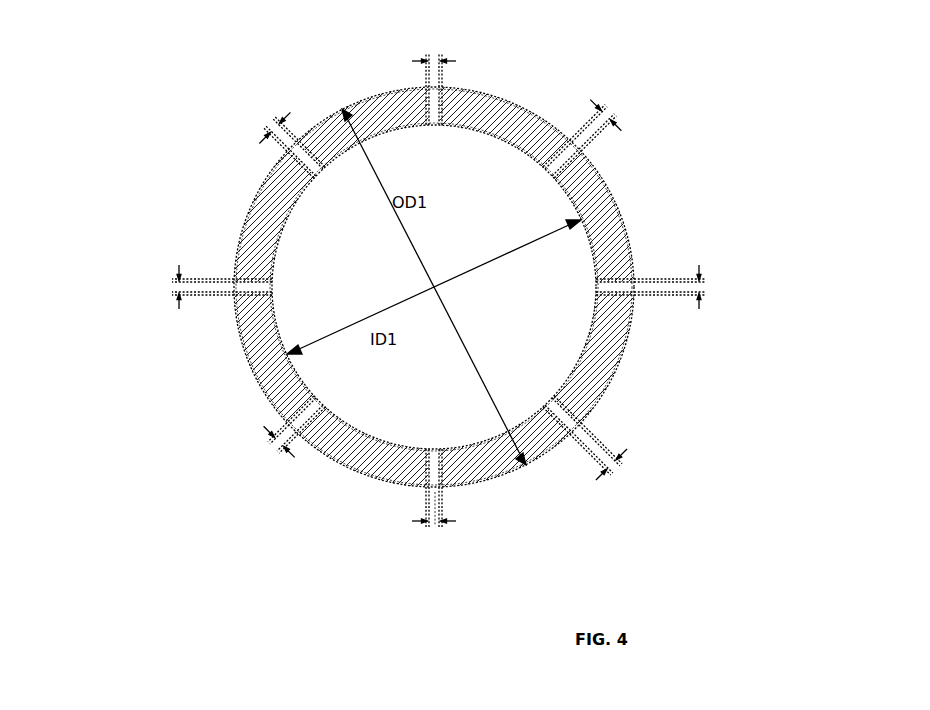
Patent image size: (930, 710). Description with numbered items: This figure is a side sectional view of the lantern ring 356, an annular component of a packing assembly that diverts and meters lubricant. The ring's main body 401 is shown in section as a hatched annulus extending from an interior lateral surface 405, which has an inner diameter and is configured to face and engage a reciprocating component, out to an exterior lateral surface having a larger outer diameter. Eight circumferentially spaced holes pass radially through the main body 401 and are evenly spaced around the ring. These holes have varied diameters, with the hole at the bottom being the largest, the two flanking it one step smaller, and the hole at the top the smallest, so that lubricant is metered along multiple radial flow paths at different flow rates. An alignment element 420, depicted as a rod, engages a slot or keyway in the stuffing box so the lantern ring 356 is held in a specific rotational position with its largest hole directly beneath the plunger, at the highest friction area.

The lantern ring 356 is at (173, 102).
The main body 401 is at (243, 232).
The interior lateral surface 405 is at (500, 152).
The alignment element 420 is at (427, 534).